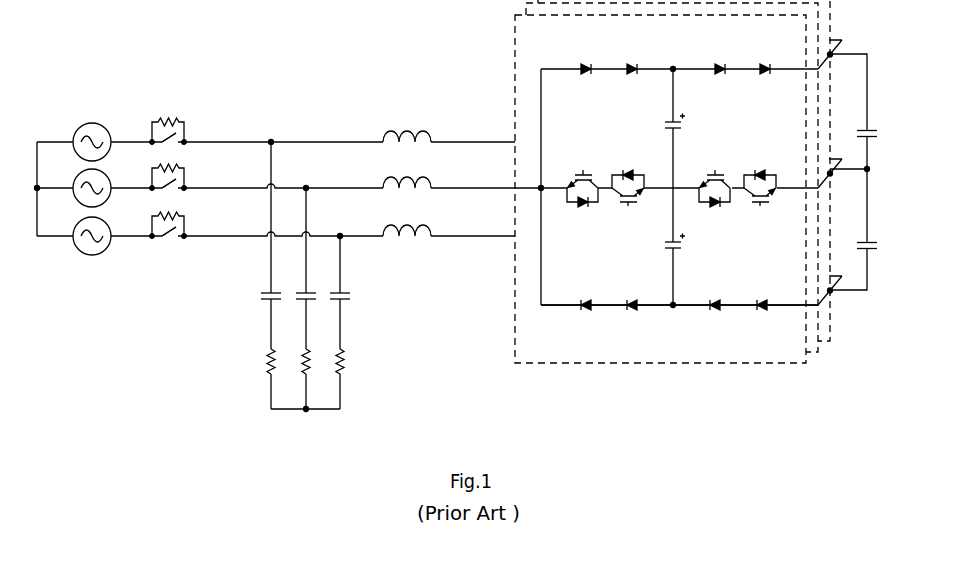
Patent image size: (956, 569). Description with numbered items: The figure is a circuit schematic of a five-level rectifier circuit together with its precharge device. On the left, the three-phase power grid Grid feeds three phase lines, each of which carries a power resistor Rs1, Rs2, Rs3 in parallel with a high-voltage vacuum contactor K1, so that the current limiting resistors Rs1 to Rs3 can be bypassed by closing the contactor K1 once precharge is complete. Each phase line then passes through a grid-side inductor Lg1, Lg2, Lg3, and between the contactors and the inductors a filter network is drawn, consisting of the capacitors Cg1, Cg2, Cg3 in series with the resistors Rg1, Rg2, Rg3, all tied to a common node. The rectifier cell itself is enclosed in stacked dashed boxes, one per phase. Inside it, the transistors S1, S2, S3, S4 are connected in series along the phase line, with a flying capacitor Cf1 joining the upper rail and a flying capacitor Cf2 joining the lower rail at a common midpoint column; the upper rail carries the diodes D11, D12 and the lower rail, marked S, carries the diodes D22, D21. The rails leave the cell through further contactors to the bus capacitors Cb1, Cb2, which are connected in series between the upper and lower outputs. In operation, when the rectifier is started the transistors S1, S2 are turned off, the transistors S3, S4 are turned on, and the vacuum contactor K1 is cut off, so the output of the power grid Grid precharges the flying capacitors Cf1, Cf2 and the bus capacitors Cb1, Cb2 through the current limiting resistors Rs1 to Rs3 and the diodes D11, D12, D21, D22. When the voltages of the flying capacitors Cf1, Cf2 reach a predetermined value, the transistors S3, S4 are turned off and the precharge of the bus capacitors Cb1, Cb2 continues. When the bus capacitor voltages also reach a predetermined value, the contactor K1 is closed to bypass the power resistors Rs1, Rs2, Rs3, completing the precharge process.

The power grid Grid is at (73, 181).
The power resistor Rs1 is at (176, 126).
The power resistor Rs2 is at (176, 172).
The power resistor Rs3 is at (176, 220).
The vacuum contactor K1 is at (170, 192).
The grid-side inductor phase 1 Lg1 is at (407, 221).
The grid-side inductor phase 2 Lg2 is at (407, 173).
The grid-side inductor phase 3 Lg3 is at (407, 127).
The filter capacitor phase 1 Cg1 is at (351, 292).
The filter capacitor phase 2 Cg2 is at (316, 268).
The filter capacitor phase 3 Cg3 is at (282, 245).
The damping resistor phase 1 Rg1 is at (354, 371).
The damping resistor phase 2 Rg2 is at (319, 371).
The damping resistor phase 3 Rg3 is at (285, 371).
The upper diode 1 D11 is at (721, 59).
The upper diode 2 D12 is at (767, 59).
The lower diode 1 D21 is at (762, 314).
The lower diode 2 D22 is at (716, 314).
The flying capacitor Cf1 is at (686, 124).
The flying capacitor Cf2 is at (686, 244).
The switching cell / bottom rail S is at (679, 293).
The transistor S1 is at (582, 181).
The transistor S2 is at (628, 180).
The transistor S3 is at (714, 181).
The transistor S4 is at (760, 180).
The bus capacitor Cb1 is at (868, 113).
The bus capacitor Cb2 is at (868, 229).